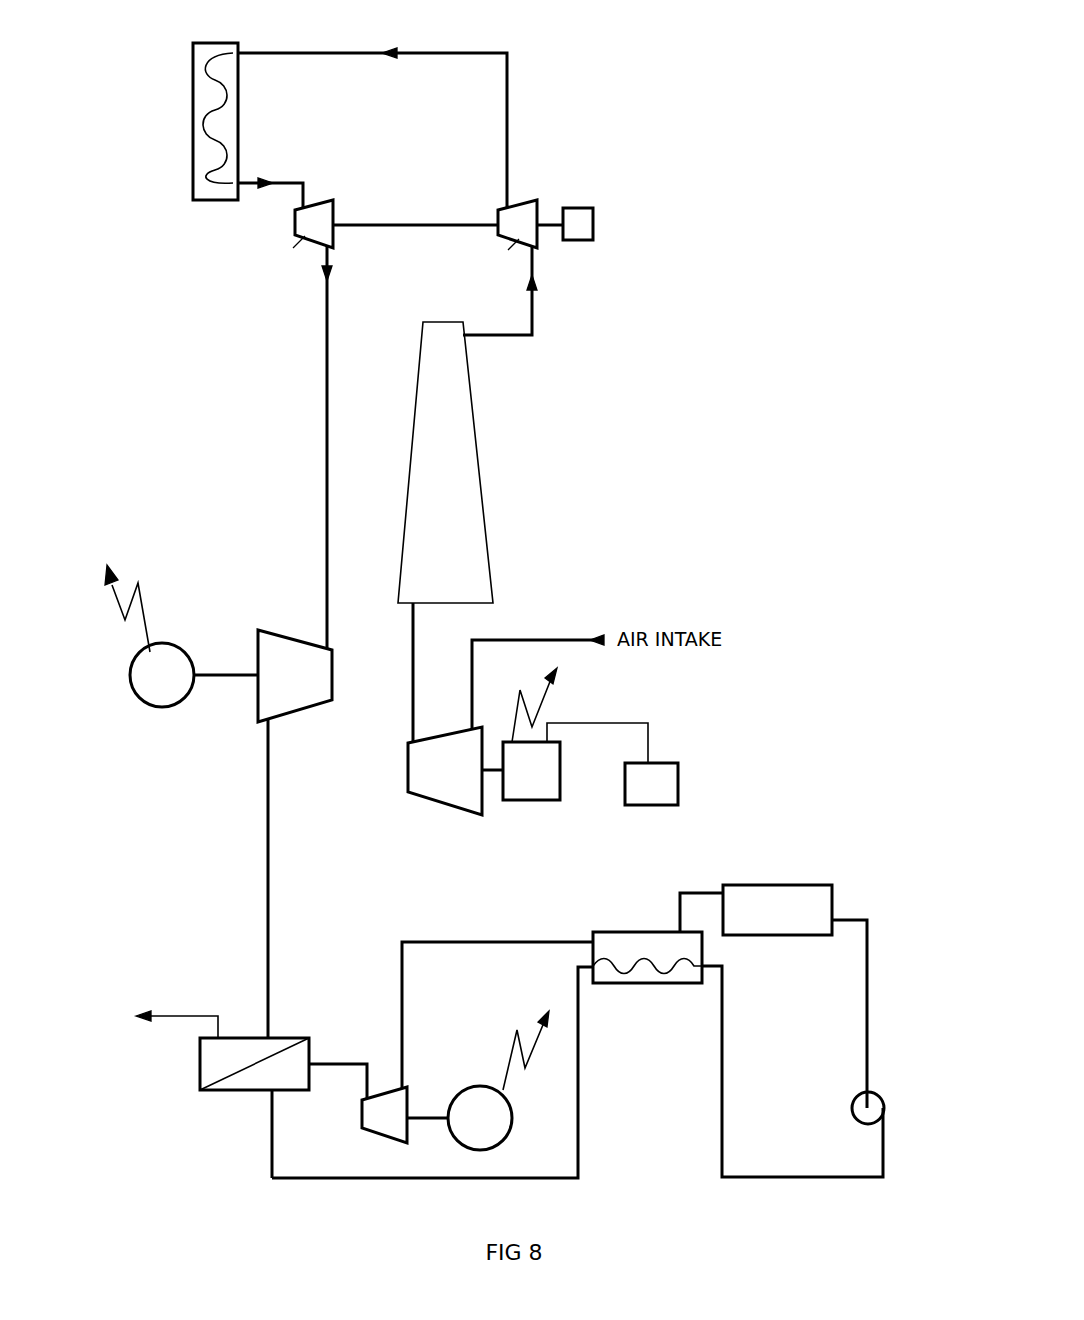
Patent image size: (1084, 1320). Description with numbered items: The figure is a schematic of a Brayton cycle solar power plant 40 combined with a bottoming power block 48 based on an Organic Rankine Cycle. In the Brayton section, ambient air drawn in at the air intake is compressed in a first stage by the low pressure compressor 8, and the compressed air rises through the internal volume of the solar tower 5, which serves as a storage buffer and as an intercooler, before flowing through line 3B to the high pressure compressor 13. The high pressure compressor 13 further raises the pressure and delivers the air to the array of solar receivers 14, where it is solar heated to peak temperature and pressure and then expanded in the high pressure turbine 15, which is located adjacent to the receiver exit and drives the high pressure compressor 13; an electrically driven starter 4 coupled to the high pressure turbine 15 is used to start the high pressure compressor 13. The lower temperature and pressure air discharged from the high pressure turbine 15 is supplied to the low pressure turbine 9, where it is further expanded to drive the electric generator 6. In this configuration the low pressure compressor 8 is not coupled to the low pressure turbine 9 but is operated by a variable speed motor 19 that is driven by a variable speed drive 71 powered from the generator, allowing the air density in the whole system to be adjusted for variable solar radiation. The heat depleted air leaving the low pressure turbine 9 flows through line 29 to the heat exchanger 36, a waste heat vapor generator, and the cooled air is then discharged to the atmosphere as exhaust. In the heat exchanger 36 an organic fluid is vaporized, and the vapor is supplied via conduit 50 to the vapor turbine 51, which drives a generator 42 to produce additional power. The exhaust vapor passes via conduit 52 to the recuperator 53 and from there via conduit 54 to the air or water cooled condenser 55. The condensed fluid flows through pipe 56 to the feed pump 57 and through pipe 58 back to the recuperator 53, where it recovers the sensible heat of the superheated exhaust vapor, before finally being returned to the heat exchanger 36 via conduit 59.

The array of solar receivers 14 is at (217, 43).
The high pressure turbine 15 is at (331, 201).
The high pressure compressor 13 is at (535, 201).
The electrically driven starter 4 is at (579, 209).
The compressed air line 3B is at (534, 321).
The solar tower 5 is at (484, 511).
The low pressure compressor 8 is at (437, 740).
The variable speed motor 19 is at (547, 801).
The variable speed drive 71 is at (665, 764).
The electric generator 6 is at (177, 648).
The low pressure turbine 9 is at (278, 635).
The line 29 is at (270, 987).
The heat exchanger 36 is at (247, 1039).
The power plant 40 is at (150, 990).
The bottoming power block 48 is at (219, 1169).
The conduit 50 is at (343, 1065).
The vapor turbine 51 is at (382, 1138).
The generator 42 is at (462, 1089).
The conduit 52 is at (510, 942).
The conduit 59 is at (532, 1178).
The recuperator 53 is at (605, 933).
The conduit 54 is at (688, 893).
The condenser 55 is at (738, 885).
The pipe 56 is at (870, 1021).
The feed pump 57 is at (856, 1094).
The pipe 58 is at (755, 1177).